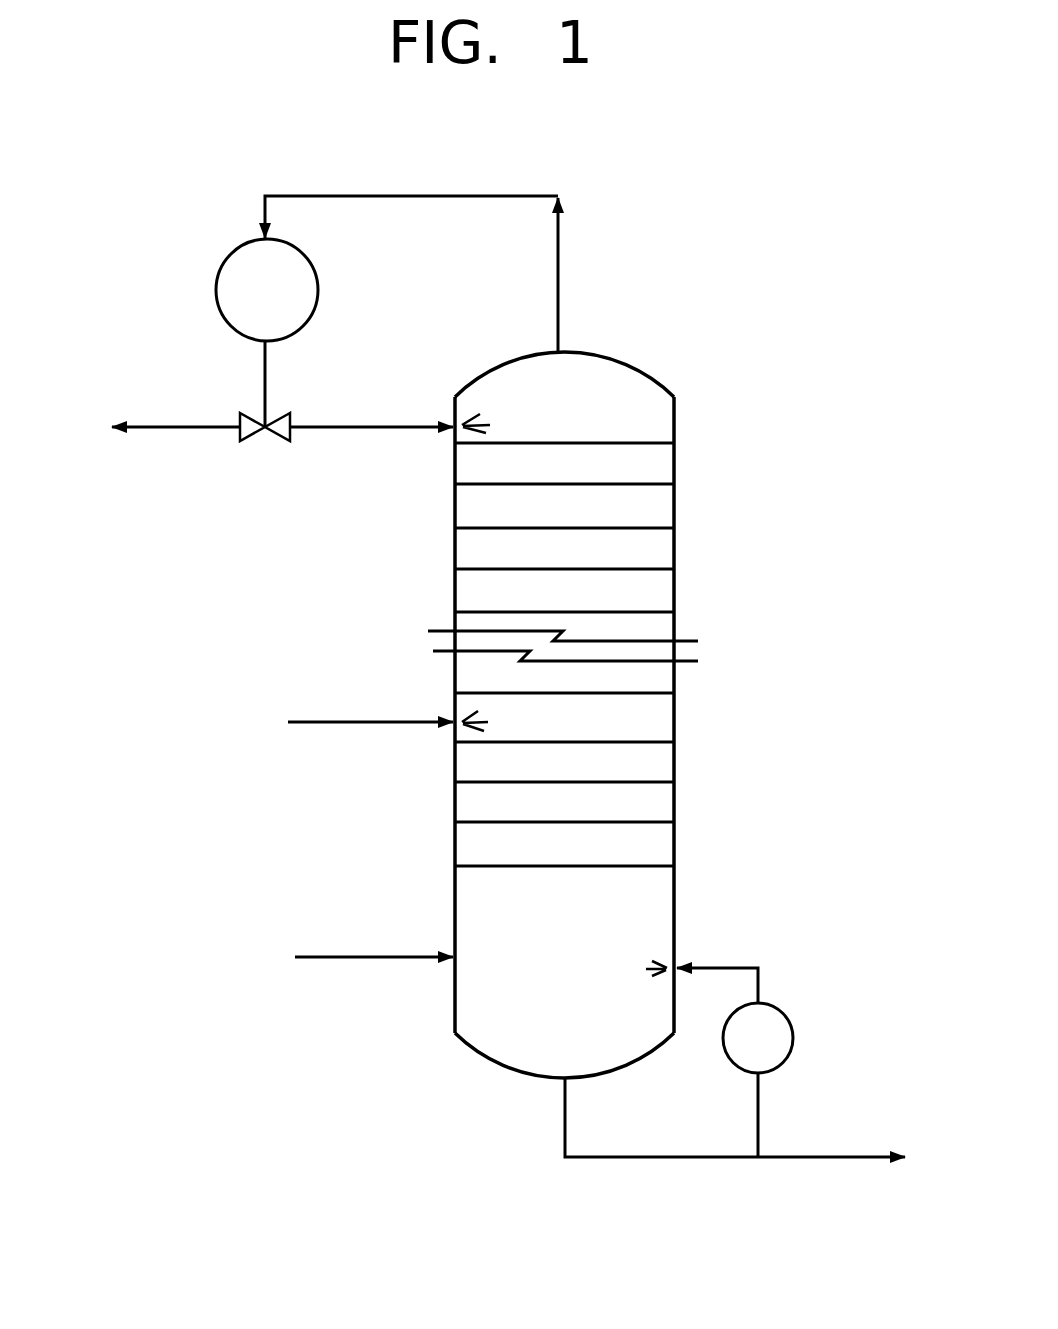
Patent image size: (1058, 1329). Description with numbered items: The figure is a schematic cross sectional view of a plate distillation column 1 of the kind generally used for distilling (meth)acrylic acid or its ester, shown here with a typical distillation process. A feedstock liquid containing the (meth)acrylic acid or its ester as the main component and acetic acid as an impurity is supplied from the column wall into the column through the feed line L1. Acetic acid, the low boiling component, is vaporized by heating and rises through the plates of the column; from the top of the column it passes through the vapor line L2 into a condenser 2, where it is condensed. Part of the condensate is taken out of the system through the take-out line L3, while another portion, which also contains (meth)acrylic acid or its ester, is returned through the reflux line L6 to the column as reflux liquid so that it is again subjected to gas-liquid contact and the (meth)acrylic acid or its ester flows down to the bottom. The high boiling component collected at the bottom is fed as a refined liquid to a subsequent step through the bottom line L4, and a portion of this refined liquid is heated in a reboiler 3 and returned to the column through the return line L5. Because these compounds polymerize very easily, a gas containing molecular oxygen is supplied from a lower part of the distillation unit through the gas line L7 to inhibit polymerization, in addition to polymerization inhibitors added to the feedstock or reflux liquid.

The plate distillation column 1 is at (647, 367).
The condenser 2 is at (228, 252).
The reboiler 3 is at (790, 1022).
The feedstock liquid supply line L1 is at (348, 720).
The column top vapor line L2 is at (558, 275).
The condensate take-out line L3 is at (173, 428).
The bottom refined liquid line L4 is at (692, 1160).
The reboiler return line L5 is at (740, 967).
The reflux liquid return line L6 is at (375, 428).
The molecular oxygen-containing gas supply line L7 is at (352, 955).